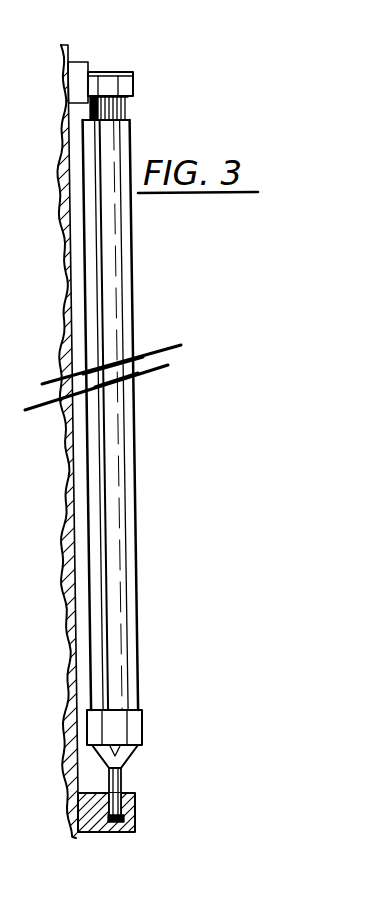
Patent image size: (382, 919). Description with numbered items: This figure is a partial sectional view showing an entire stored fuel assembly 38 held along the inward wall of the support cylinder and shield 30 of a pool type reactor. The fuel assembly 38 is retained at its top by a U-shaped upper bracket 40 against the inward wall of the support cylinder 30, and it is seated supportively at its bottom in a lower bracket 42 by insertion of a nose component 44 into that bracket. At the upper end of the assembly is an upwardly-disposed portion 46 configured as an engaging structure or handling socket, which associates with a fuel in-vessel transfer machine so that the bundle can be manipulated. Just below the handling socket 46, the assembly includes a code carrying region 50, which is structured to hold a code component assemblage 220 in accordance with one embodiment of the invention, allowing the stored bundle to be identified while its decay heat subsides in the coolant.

The support cylinder and shield 30 is at (78, 62).
The upper bracket 40 is at (82, 72).
The upwardly-disposed portion 46 is at (140, 72).
The code carrying region 50 is at (168, 88).
The code component assemblage 220 is at (130, 106).
The fuel assembly 38 is at (132, 288).
The nose component 44 is at (133, 733).
The lower bracket 42 is at (137, 803).